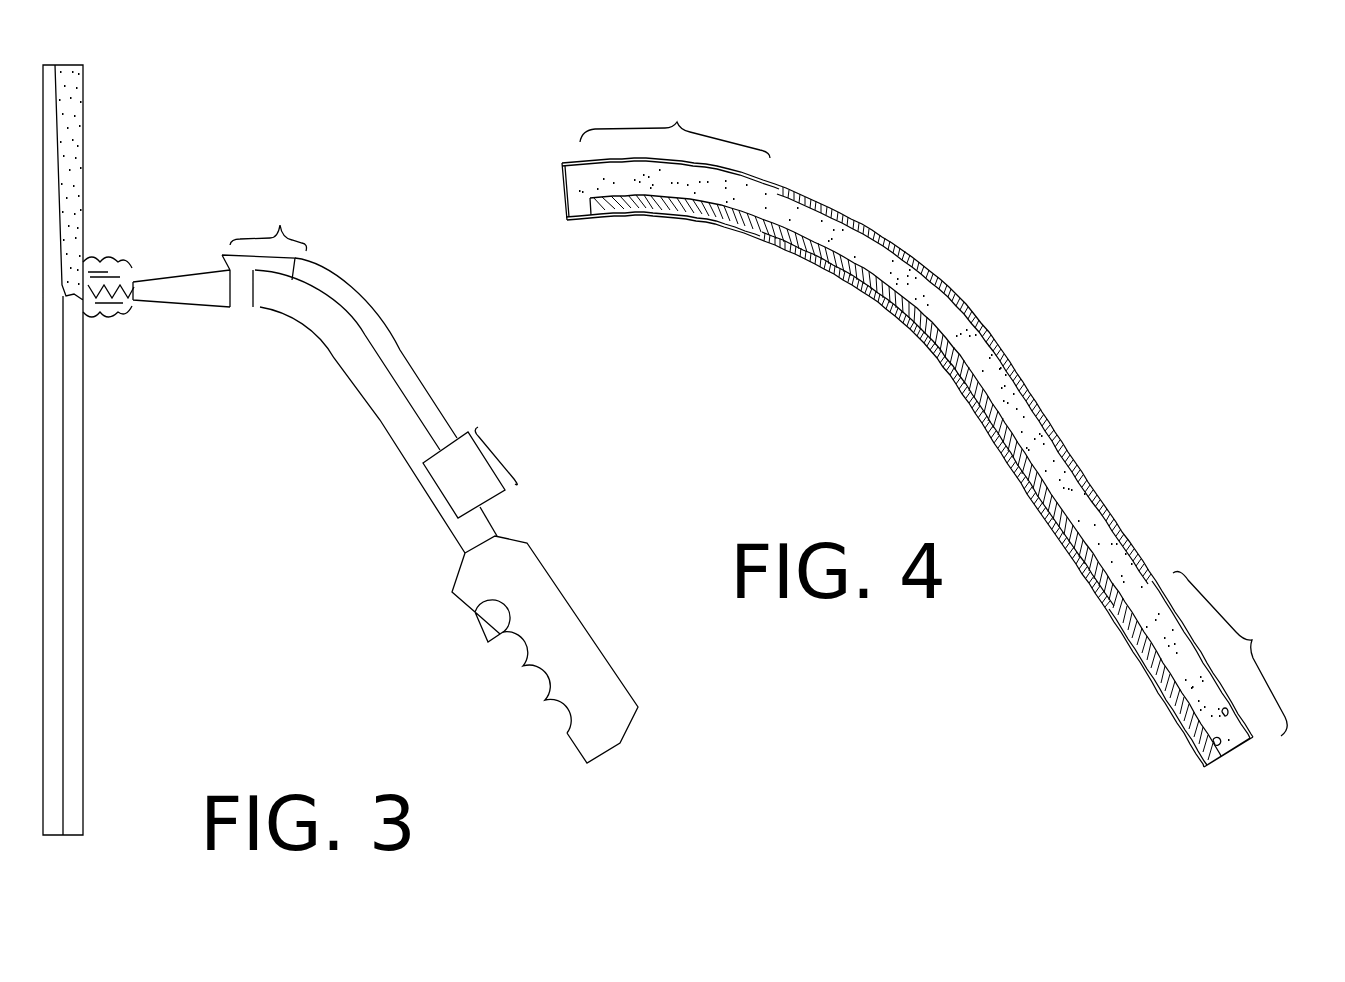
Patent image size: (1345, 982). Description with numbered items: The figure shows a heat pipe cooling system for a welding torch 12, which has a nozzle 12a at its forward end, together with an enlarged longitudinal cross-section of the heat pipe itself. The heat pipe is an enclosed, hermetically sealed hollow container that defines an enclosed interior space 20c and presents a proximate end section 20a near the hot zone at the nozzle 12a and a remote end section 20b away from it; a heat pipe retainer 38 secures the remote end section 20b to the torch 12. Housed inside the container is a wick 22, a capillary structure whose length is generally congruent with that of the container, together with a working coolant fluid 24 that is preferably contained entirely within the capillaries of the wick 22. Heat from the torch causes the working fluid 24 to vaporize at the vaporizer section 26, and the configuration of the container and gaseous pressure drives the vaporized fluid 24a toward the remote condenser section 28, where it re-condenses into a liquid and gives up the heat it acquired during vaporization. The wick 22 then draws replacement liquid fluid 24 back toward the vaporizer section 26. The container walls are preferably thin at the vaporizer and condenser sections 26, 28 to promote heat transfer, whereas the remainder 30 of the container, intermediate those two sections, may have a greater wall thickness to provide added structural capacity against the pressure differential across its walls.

In FIG. 3, the welding torch 12 is at (369, 572).
In FIG. 3, the nozzle 12a is at (198, 300).
In FIG. 3, the proximate end section 20a is at (222, 255).
In FIG. 4, the proximate end section 20a is at (562, 178).
In FIG. 3, the remote end section 20b is at (500, 498).
In FIG. 4, the remote end section 20b is at (1228, 752).
In FIG. 4, the enclosed interior space 20c is at (892, 278).
In FIG. 4, the wick 22 is at (940, 360).
In FIG. 4, the working coolant fluid 24 is at (1213, 750).
In FIG. 4, the vaporized fluid 24a is at (1007, 390).
In FIG. 3, the vaporizer section 26 is at (280, 225).
In FIG. 4, the vaporizer section 26 is at (677, 122).
In FIG. 3, the condenser section 28 is at (498, 453).
In FIG. 4, the condenser section 28 is at (1253, 640).
In FIG. 4, the remainder of the container 30 is at (987, 327).
In FIG. 3, the heat pipe retainer 38 is at (467, 433).